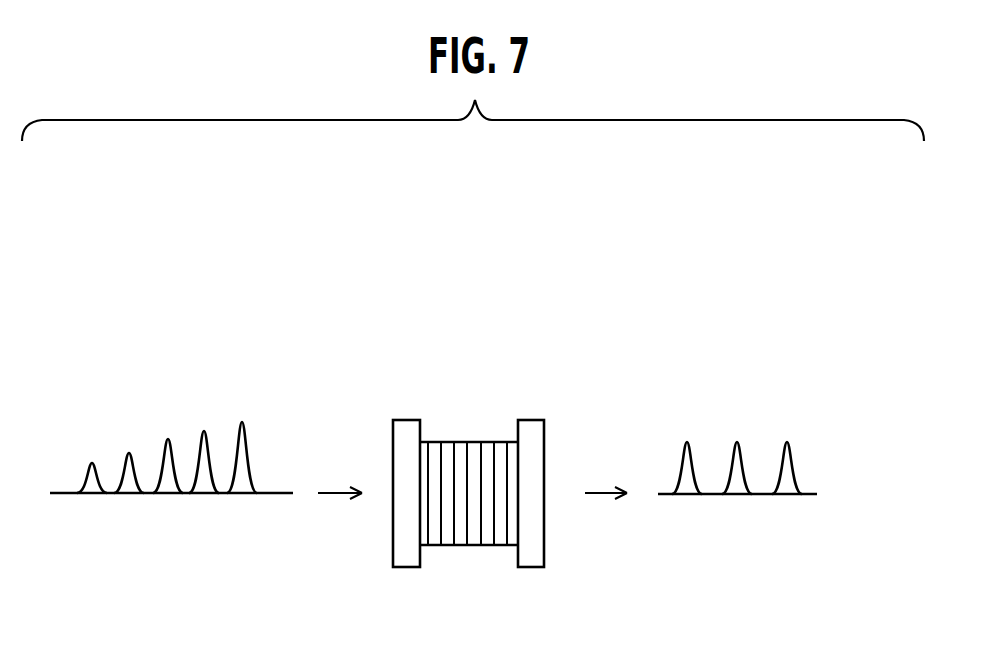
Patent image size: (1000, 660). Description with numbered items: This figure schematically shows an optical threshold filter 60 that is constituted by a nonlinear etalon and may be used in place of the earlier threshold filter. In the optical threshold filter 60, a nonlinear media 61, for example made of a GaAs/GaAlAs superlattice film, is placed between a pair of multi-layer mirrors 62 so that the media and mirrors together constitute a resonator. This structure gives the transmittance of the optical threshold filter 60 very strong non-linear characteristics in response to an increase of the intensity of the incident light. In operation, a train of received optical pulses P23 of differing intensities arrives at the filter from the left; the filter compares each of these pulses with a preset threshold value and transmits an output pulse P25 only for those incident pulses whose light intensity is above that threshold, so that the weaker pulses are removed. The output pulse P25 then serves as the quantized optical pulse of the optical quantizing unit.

The optical threshold filter 60 is at (550, 408).
The nonlinear media 61 is at (517, 578).
The multi-layer mirrors 62 is at (407, 418).
The received optical pulses P23 is at (139, 436).
The output pulse P25 is at (742, 448).